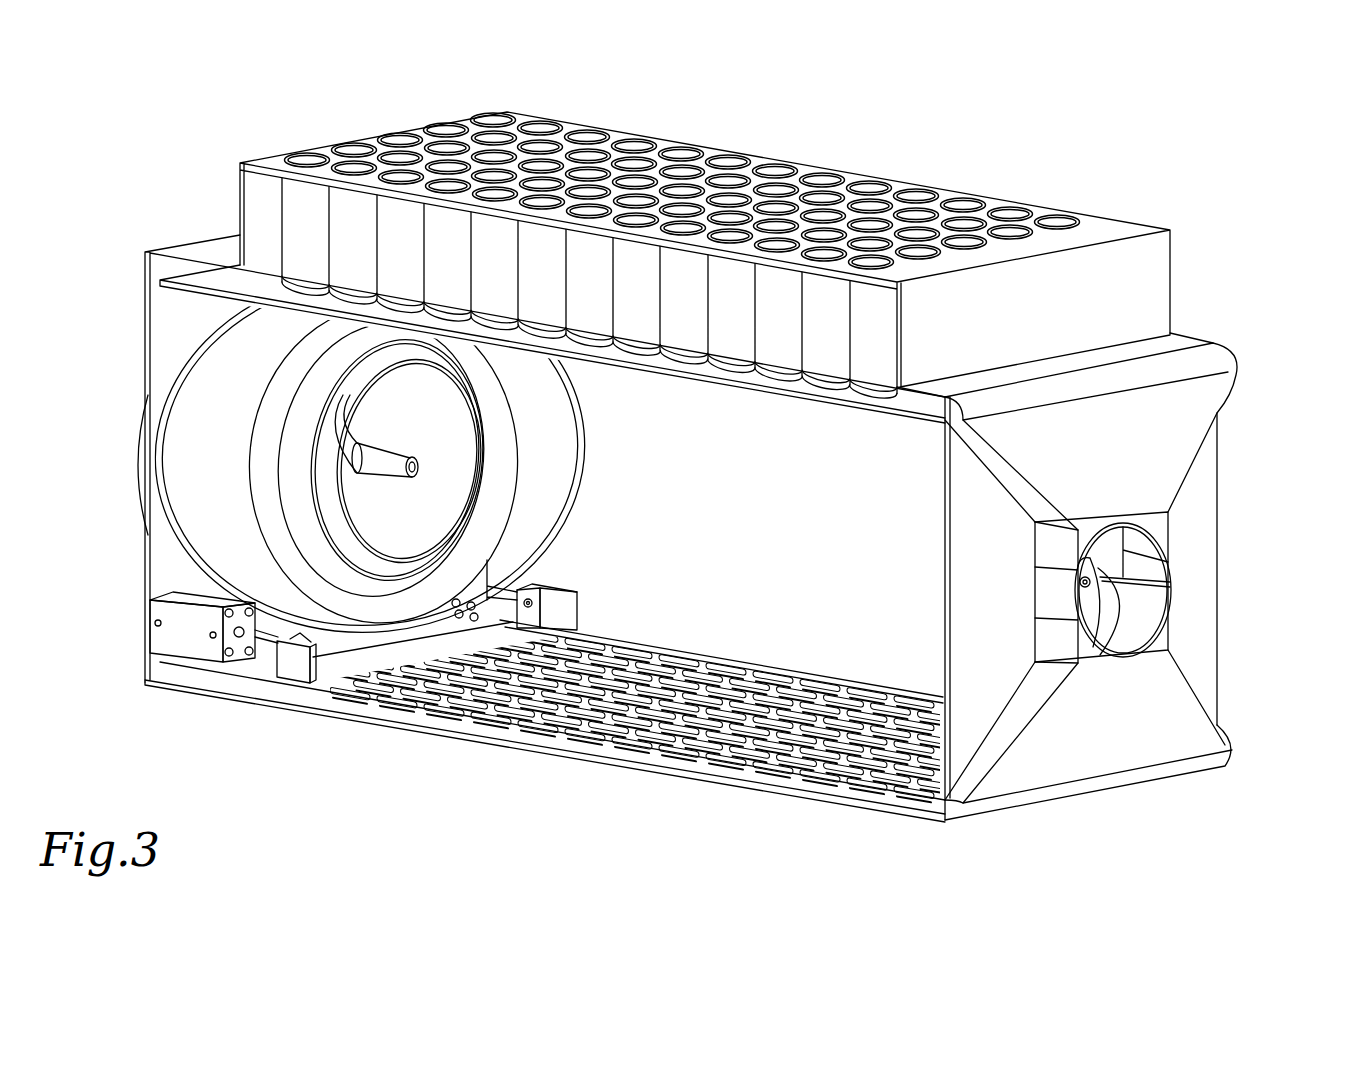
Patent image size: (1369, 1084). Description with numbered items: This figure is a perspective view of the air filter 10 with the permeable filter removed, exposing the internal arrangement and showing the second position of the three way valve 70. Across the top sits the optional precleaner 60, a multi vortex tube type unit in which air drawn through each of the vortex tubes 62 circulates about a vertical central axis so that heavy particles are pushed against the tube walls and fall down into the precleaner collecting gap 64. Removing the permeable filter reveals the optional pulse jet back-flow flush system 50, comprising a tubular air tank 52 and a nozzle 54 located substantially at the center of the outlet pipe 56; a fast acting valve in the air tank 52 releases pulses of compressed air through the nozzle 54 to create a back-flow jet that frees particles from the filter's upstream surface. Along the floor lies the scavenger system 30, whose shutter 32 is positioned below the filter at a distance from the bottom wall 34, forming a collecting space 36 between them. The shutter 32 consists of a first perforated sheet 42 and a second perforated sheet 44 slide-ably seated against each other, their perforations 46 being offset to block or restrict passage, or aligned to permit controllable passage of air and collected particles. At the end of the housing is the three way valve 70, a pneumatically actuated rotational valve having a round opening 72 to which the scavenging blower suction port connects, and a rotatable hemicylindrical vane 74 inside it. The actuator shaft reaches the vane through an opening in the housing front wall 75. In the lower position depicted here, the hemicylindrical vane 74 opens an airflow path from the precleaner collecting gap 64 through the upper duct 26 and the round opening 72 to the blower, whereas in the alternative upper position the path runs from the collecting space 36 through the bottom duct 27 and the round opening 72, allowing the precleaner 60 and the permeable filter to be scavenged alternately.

The air filter 10 is at (1296, 100).
The upper duct 26 is at (1217, 383).
The bottom duct 27 is at (997, 788).
The scavenger system 30 is at (937, 879).
The shutter 32 is at (592, 727).
The bottom wall 34 is at (412, 732).
The collecting space 36 is at (497, 735).
The first perforated sheet 42 is at (244, 672).
The second perforated sheet 44 is at (298, 692).
The perforations 46 is at (777, 760).
The pulse jet back-flow flush system 50 is at (114, 340).
The air tank 52 is at (173, 465).
The nozzle 54 is at (390, 453).
The outlet pipe 56 is at (423, 538).
The precleaner 60 is at (413, 133).
The vortex tubes 62 is at (305, 215).
The precleaner collecting gap 64 is at (227, 283).
The three way valve 70 is at (1198, 532).
The round opening 72 is at (1160, 625).
The hemicylindrical vane 74 is at (1153, 600).
The front wall 75 is at (1204, 490).